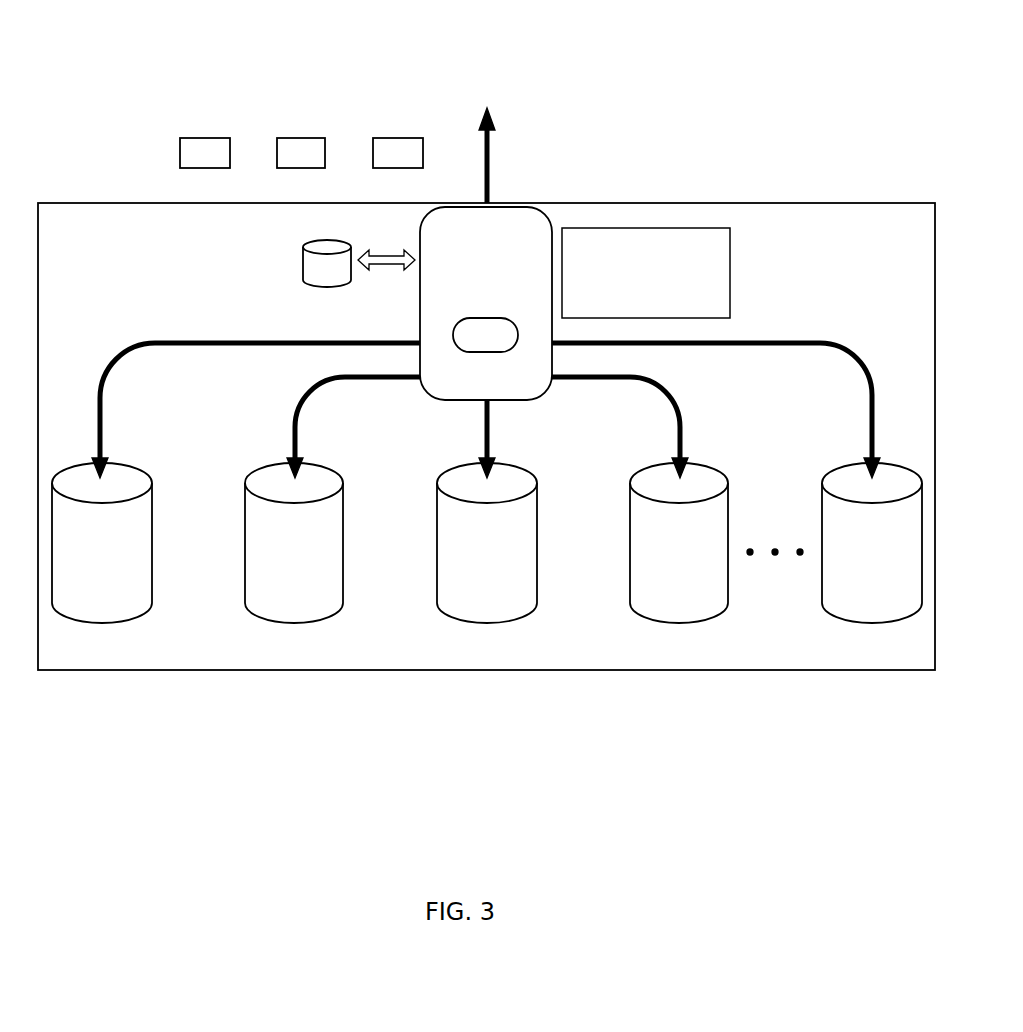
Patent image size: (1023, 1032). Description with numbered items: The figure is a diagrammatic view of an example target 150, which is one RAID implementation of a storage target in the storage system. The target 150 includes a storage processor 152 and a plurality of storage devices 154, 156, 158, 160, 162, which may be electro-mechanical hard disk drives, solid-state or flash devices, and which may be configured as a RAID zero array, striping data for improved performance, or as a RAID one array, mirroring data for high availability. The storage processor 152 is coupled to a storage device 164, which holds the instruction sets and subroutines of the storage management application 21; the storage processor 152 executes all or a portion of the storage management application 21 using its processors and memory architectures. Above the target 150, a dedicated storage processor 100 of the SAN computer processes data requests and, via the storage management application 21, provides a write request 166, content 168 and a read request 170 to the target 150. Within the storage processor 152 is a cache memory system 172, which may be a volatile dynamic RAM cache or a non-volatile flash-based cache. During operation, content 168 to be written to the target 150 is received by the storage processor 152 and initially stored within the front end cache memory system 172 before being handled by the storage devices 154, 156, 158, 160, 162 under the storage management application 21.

The storage management application 21 is at (730, 284).
The storage processor 100 is at (487, 116).
The target 150 is at (486, 436).
The storage processor 152 is at (486, 303).
The storage device 154 is at (236, 483).
The storage device 156 is at (332, 500).
The storage device 158 is at (487, 511).
The storage device 160 is at (640, 500).
The storage device 162 is at (737, 483).
The storage device 164 is at (359, 263).
The write request 166 is at (180, 158).
The content 168 is at (277, 158).
The read request 170 is at (373, 158).
The cache memory system 172 is at (485, 335).